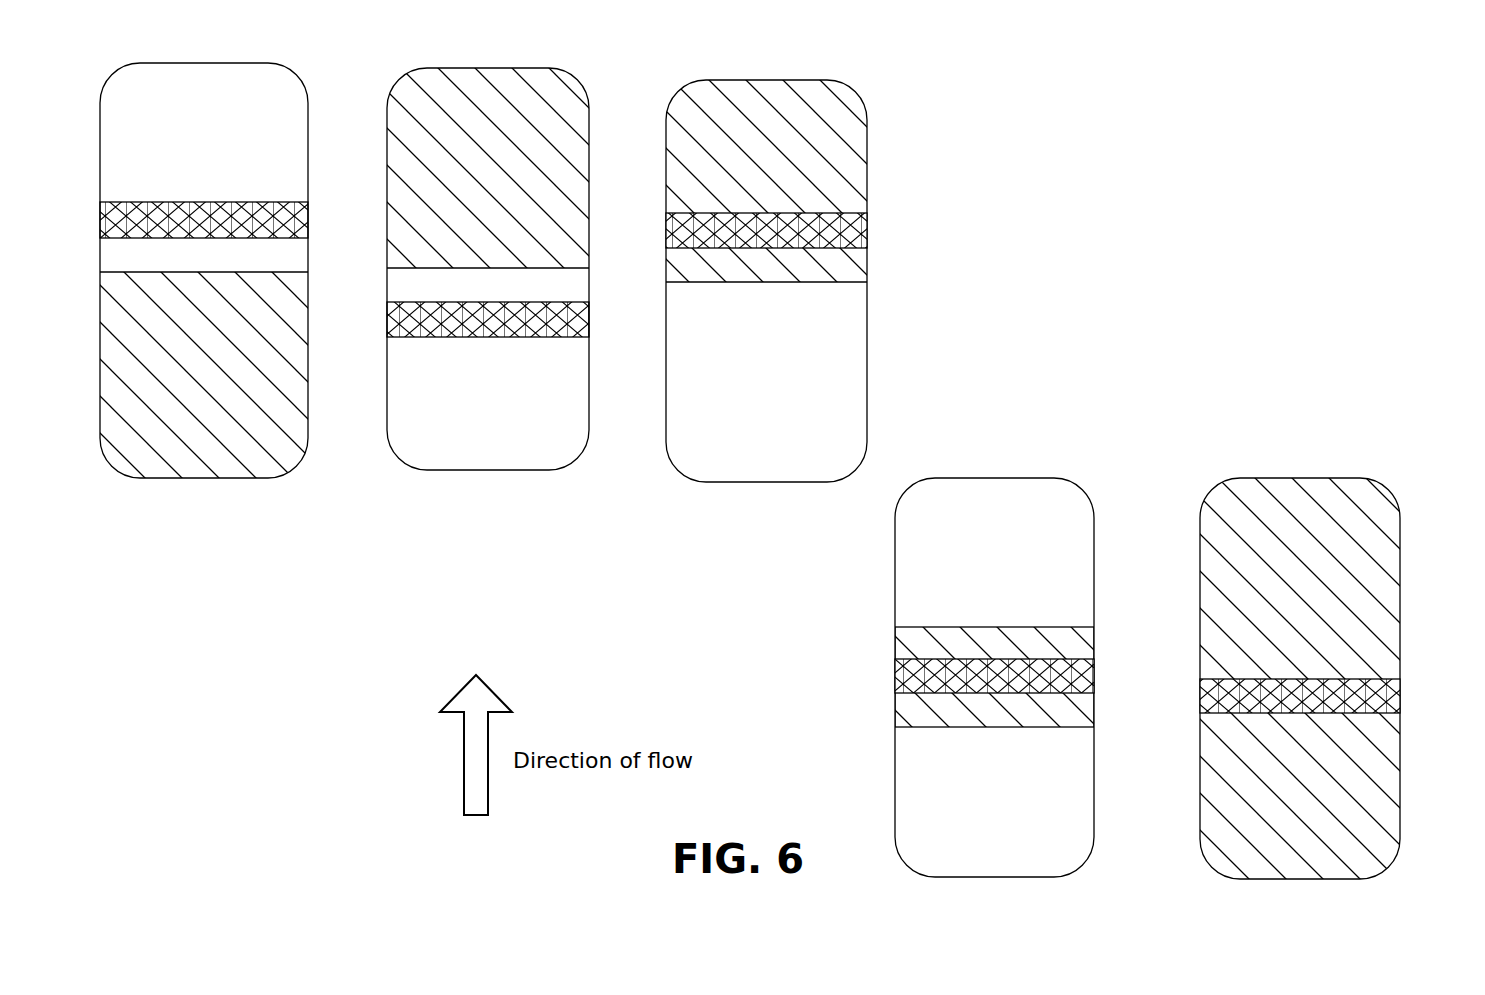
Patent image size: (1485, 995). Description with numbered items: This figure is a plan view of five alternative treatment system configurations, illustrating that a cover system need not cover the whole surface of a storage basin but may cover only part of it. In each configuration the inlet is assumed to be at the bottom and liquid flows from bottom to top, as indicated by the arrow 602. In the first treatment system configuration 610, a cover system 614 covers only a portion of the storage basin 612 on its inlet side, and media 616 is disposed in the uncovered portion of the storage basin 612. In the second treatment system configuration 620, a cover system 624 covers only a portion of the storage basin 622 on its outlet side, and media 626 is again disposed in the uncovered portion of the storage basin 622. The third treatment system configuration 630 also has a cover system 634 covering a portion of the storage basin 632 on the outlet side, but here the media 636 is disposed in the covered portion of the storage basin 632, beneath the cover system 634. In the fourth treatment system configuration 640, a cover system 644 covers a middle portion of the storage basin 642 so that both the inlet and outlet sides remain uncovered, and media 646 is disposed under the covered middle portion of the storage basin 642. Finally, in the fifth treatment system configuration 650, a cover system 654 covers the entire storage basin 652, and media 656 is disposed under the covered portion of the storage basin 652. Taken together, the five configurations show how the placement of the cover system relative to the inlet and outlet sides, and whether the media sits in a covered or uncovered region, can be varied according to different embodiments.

The arrow 602 is at (464, 743).
The first treatment system configuration 610 is at (204, 248).
The storage basin 612 is at (305, 128).
The cover system 614 is at (287, 435).
The media 616 is at (297, 220).
The second treatment system configuration 620 is at (488, 244).
The storage basin 622 is at (565, 463).
The cover system 624 is at (575, 120).
The media 626 is at (577, 313).
The third treatment system configuration 630 is at (766, 255).
The storage basin 632 is at (723, 481).
The cover system 634 is at (848, 130).
The media 636 is at (857, 230).
The fourth treatment system configuration 640 is at (994, 655).
The storage basin 642 is at (1094, 545).
The cover system 644 is at (1078, 717).
The media 646 is at (1090, 668).
The fifth treatment system configuration 650 is at (1300, 656).
The storage basin 652 is at (1400, 565).
The cover system 654 is at (1385, 783).
The media 656 is at (1392, 695).